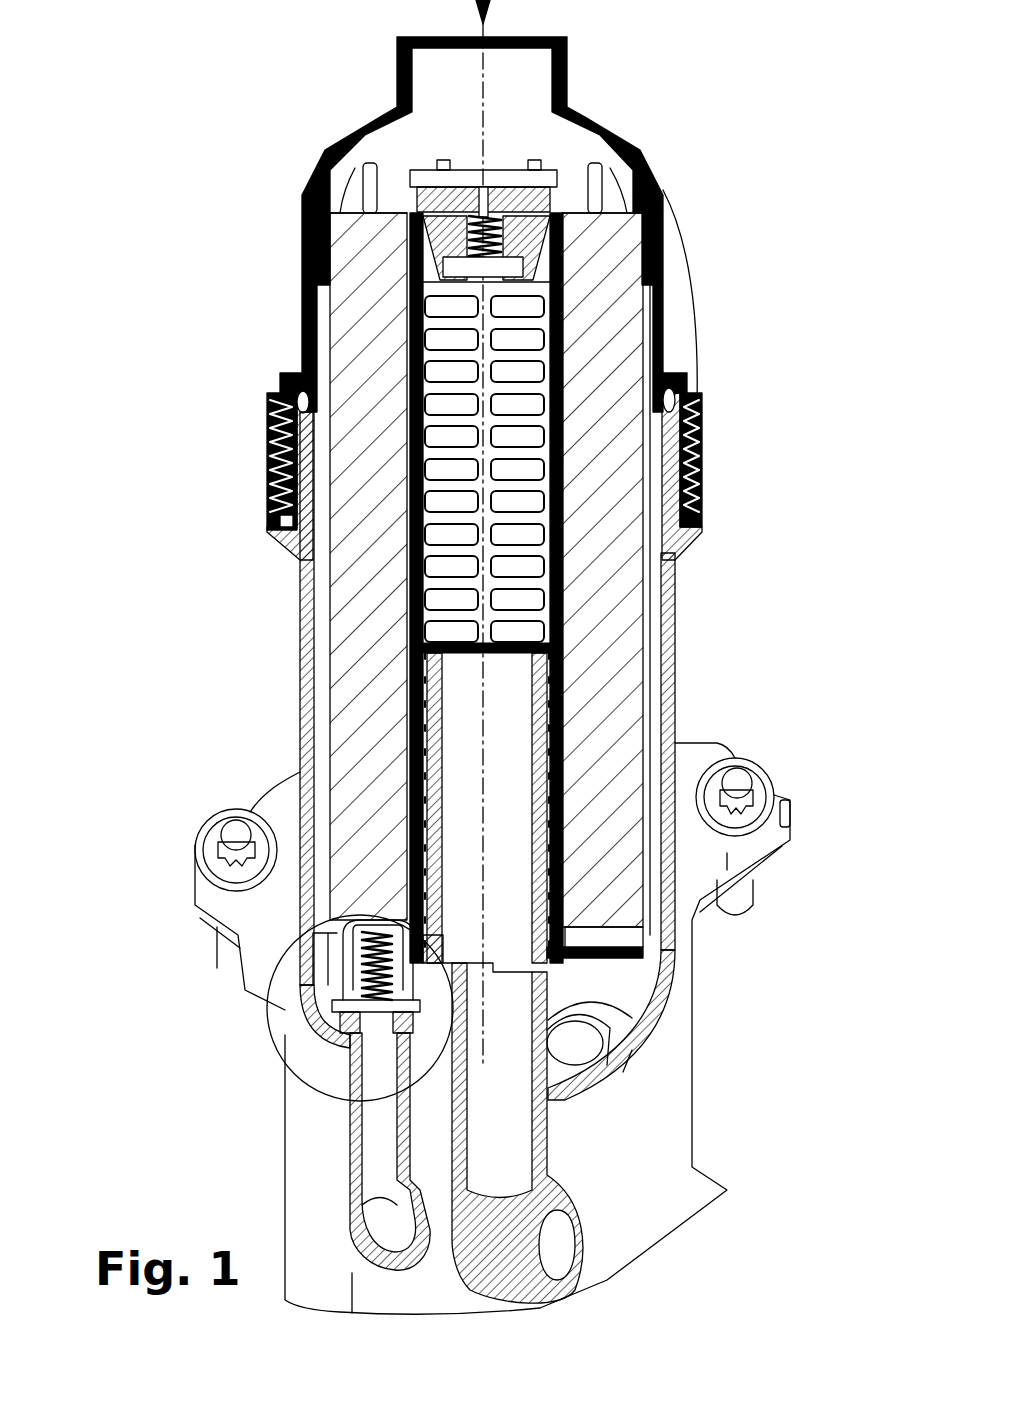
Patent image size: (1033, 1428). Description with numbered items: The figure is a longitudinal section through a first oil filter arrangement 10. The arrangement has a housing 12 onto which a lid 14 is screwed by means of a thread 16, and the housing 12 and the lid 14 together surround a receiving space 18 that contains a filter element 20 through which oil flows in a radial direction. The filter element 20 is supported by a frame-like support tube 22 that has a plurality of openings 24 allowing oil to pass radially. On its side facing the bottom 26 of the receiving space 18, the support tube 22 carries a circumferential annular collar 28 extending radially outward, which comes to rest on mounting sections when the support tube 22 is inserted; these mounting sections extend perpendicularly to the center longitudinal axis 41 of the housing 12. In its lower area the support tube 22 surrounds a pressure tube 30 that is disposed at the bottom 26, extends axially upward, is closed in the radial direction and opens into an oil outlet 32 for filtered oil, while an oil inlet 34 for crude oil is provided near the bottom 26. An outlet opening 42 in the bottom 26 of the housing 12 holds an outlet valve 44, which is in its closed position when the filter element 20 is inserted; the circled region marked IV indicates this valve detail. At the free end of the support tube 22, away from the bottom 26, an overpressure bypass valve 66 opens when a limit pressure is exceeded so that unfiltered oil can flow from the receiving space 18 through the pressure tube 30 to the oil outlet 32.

The oil filter arrangement 10 is at (687, 181).
The housing 12 is at (677, 603).
The lid 14 is at (663, 276).
The thread 16 is at (698, 440).
The receiving space 18 is at (652, 642).
The filter element 20 is at (352, 562).
The support tube 22 is at (560, 727).
The openings 24 is at (533, 566).
The bottom of the receiving space 26 is at (648, 1015).
The annular collar 28 is at (640, 957).
The pressure tube 30 is at (438, 735).
The oil outlet 32 is at (517, 1123).
The oil inlet 34 is at (630, 977).
The center longitudinal axis 41 is at (480, 95).
The outlet opening 42 is at (373, 1163).
The outlet valve 44 is at (337, 982).
The overpressure bypass valve 66 is at (497, 165).
The detail IV is at (268, 1035).